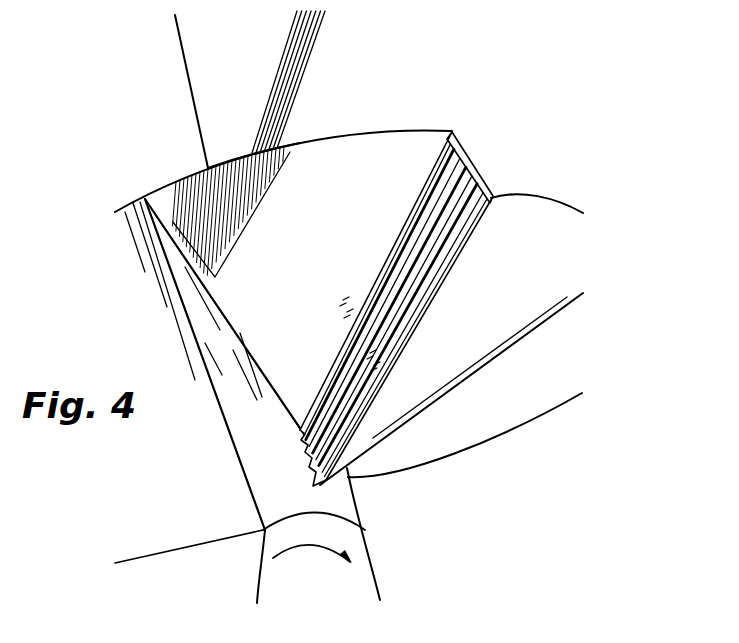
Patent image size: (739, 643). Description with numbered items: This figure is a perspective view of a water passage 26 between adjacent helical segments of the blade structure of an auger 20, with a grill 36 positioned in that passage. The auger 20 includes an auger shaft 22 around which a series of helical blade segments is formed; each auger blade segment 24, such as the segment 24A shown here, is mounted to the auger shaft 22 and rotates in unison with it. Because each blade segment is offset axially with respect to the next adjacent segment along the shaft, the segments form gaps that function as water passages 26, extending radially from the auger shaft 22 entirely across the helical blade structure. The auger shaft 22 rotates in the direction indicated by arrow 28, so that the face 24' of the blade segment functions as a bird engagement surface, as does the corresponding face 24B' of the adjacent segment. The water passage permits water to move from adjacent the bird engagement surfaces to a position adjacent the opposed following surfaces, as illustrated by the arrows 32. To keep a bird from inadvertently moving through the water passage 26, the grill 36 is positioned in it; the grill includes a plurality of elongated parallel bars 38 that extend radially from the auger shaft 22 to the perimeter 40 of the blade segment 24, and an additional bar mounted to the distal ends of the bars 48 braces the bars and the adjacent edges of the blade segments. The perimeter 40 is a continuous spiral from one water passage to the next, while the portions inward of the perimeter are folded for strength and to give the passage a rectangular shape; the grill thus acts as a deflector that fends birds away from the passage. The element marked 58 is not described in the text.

The auger 20 is at (588, 205).
The auger shaft 22 is at (263, 583).
The auger blade segment 24 is at (283, 199).
The helical blade segment 24A is at (318, 205).
The bird engagement surface 24' is at (231, 220).
The bird engagement surface of blade segment 24B 24B' is at (453, 362).
The water passage 26 is at (423, 282).
The arrow indicating direction of rotation 28 is at (322, 548).
The arrows indicating water movement 32 is at (368, 292).
The grill 36 is at (425, 208).
The elongated parallel bars 38 is at (446, 198).
The perimeter of auger blade segment 40 is at (147, 197).
The grill bars 48 is at (422, 305).
The end face 58 is at (478, 178).